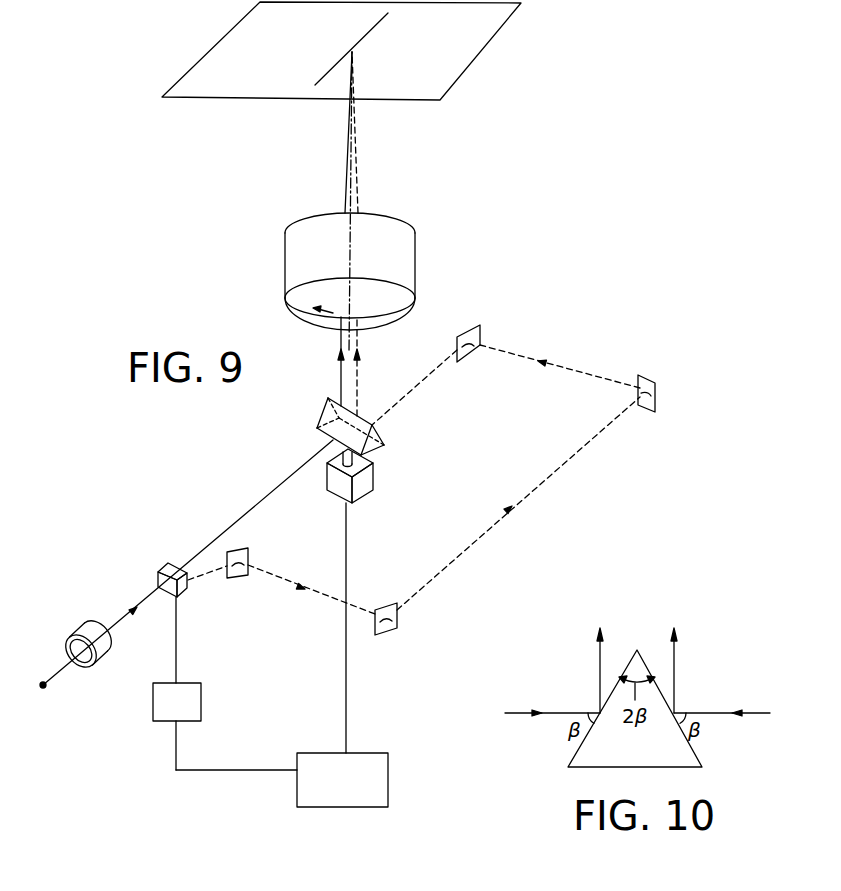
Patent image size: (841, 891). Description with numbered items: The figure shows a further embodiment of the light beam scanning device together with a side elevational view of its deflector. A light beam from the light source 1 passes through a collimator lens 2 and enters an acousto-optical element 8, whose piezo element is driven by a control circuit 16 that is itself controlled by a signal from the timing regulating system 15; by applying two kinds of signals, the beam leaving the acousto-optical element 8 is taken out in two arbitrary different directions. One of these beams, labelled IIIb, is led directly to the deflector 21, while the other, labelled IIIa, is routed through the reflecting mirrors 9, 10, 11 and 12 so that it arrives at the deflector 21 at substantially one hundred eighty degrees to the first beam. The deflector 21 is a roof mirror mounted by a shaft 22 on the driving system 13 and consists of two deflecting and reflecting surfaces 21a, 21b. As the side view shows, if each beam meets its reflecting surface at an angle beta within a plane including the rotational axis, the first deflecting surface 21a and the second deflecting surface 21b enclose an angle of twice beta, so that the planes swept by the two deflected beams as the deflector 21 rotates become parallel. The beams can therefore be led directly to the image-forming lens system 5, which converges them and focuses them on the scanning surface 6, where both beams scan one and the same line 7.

In FIG. 9, the light source 1 is at (45, 688).
In FIG. 9, the collimator lens 2 is at (108, 652).
In FIG. 9, the image-forming lens system 5 is at (410, 258).
In FIG. 9, the scanning surface 6 is at (467, 63).
In FIG. 9, the line 7 is at (377, 28).
In FIG. 9, the acousto-optical element 8 is at (165, 568).
In FIG. 9, the reflecting mirror 9 is at (242, 573).
In FIG. 9, the reflecting mirror 10 is at (387, 627).
In FIG. 9, the reflecting mirror 11 is at (655, 397).
In FIG. 9, the reflecting mirror 12 is at (480, 325).
In FIG. 9, the driving system 13 is at (370, 480).
In FIG. 9, the timing regulating system 15 is at (322, 757).
In FIG. 9, the control circuit 16 is at (201, 700).
In FIG. 9, the deflector 21 is at (377, 450).
In FIG. 10, the deflector 21 is at (694, 760).
In FIG. 9, the first deflecting and reflecting surface 21a is at (357, 410).
In FIG. 10, the first deflecting and reflecting surface 21a is at (644, 662).
In FIG. 9, the second deflecting and reflecting surface 21b is at (326, 432).
In FIG. 10, the second deflecting and reflecting surface 21b is at (630, 662).
In FIG. 9, the shaft 22 is at (330, 472).
In FIG. 9, the first partial beam IIIa is at (210, 572).
In FIG. 10, the first partial beam IIIa is at (710, 710).
In FIG. 9, the second partial beam IIIb is at (235, 520).
In FIG. 10, the second partial beam IIIb is at (565, 710).